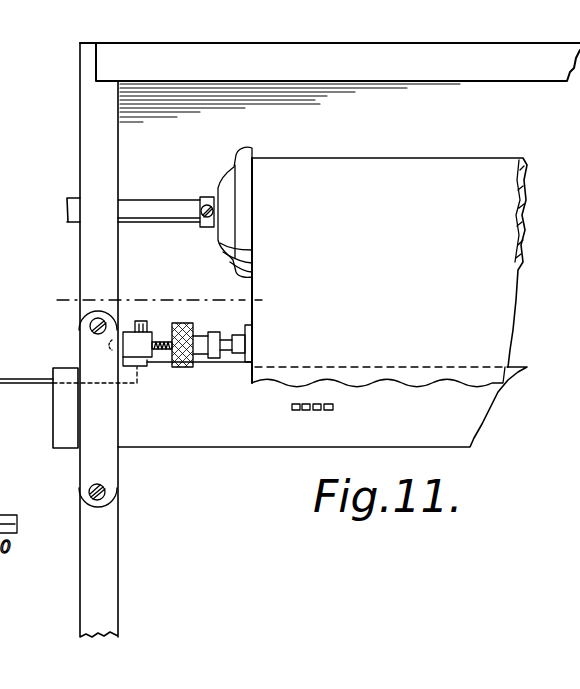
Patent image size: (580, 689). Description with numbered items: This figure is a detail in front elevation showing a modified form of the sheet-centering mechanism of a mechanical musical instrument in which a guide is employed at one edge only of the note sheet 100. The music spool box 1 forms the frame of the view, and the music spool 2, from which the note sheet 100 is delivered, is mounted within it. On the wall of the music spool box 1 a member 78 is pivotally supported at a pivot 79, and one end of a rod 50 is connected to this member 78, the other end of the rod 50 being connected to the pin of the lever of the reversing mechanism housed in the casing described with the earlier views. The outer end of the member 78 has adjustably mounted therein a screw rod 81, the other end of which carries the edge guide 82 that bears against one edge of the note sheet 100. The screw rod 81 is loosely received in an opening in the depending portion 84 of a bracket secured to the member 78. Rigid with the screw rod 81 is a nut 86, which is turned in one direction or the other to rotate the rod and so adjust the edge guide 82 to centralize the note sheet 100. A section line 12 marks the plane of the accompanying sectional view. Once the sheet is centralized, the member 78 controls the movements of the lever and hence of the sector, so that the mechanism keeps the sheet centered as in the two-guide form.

The music spool box 1 is at (90, 241).
The music spool 2 is at (243, 203).
The section line 12- 12 is at (50, 289).
The rod 50 is at (23, 385).
The member 78 is at (135, 344).
The pivot 79 is at (137, 326).
The screw rod 81 is at (165, 352).
The edge guide 82 is at (255, 339).
The depending portion 84 is at (215, 332).
The nut 86 is at (183, 369).
The note sheet 100 is at (389, 284).